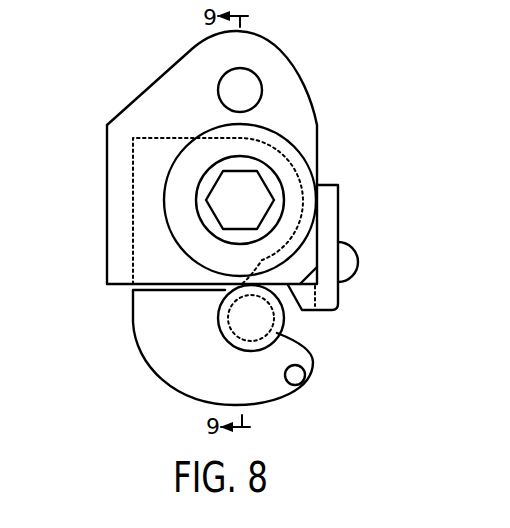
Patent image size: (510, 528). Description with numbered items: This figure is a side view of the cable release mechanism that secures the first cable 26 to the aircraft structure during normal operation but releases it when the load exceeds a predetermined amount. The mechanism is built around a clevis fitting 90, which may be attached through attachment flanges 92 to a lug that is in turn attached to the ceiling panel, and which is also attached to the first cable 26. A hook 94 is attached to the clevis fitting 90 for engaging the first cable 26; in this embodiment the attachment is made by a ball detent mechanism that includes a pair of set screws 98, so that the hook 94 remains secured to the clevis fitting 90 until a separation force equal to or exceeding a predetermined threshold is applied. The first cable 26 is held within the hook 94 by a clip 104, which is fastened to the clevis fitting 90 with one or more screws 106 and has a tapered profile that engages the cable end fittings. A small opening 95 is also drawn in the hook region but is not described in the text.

The clevis fitting 90 is at (124, 108).
The attachment flanges 92 is at (256, 73).
The set screws 98 is at (257, 187).
The clip 104 is at (338, 185).
The screws 106 is at (357, 255).
The hook 94 is at (133, 330).
The first cable 26 is at (258, 320).
The pin hole 95 is at (305, 377).